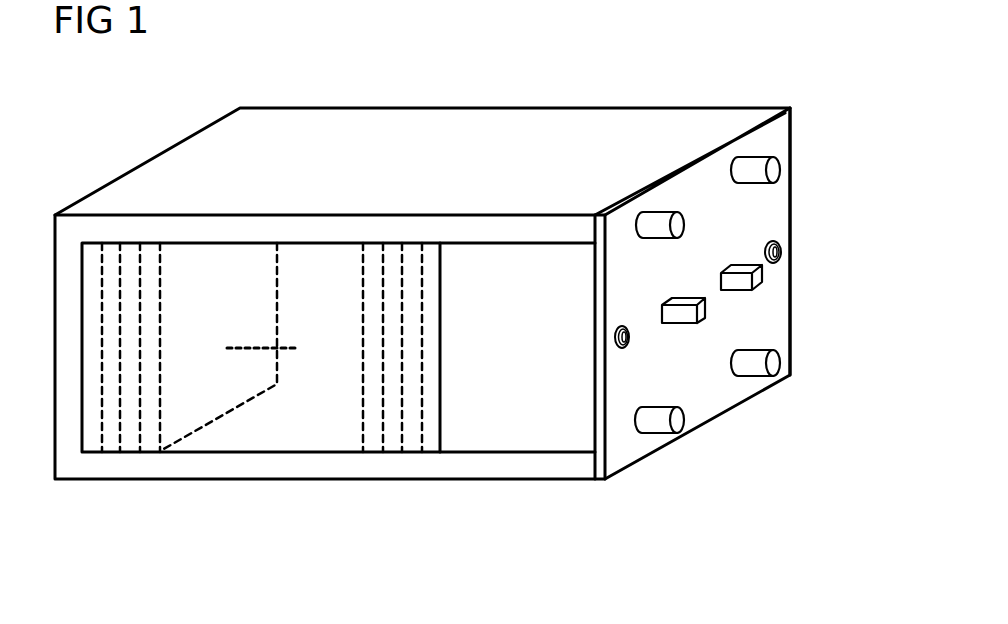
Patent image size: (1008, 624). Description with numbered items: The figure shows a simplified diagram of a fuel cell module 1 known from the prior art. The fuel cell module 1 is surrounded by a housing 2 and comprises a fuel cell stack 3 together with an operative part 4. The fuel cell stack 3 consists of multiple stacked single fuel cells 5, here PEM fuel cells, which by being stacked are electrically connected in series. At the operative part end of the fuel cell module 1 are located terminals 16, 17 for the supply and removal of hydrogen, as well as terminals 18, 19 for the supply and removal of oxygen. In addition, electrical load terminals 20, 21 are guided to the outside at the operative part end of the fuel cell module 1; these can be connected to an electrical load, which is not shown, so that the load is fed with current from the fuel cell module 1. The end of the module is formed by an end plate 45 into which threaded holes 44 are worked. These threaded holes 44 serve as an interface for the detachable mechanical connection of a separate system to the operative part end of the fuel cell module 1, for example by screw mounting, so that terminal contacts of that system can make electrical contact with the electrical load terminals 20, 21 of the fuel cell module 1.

The fuel cell module 1 is at (793, 58).
The housing 2 is at (187, 172).
The fuel cell stack 3 is at (188, 408).
The operative part 4 is at (538, 417).
The single fuel cells 5 is at (413, 338).
The terminal 16 is at (680, 225).
The terminal 17 is at (775, 363).
The terminal 18 is at (775, 170).
The terminal 19 is at (680, 420).
The electrical load terminal 20 is at (705, 311).
The electrical load terminal 21 is at (762, 280).
The threaded holes 44 is at (781, 251).
The end plate 45 is at (770, 142).